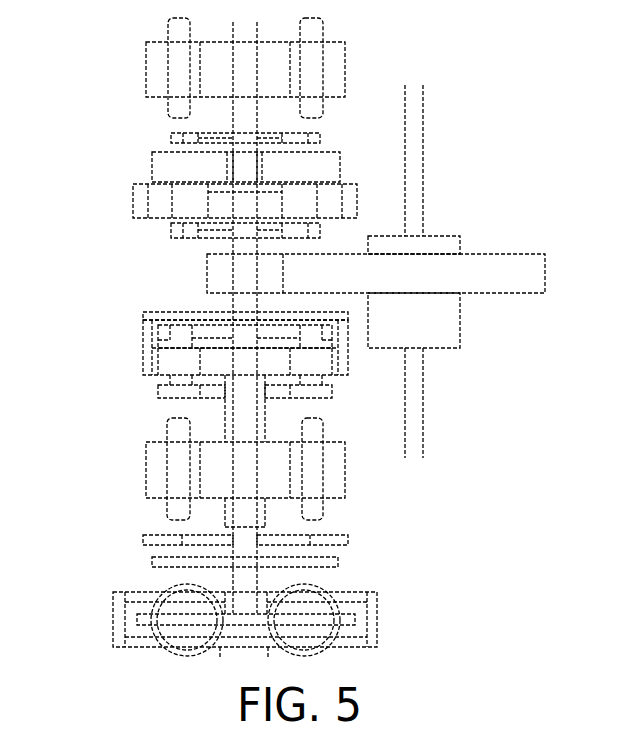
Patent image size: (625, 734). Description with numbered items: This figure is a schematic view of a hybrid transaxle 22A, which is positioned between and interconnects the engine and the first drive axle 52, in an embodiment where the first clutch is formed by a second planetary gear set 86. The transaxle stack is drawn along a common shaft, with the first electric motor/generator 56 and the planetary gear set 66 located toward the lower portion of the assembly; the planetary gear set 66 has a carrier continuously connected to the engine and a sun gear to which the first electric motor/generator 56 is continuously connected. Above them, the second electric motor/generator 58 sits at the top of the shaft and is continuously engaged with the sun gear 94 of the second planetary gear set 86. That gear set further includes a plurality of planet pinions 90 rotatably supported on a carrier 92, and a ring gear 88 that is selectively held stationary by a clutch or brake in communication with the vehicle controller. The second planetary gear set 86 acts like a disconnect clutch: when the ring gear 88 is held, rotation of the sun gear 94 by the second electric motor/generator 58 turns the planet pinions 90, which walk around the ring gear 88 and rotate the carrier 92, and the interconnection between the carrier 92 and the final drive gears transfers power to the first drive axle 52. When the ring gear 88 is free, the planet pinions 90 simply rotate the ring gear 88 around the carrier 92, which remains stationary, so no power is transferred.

The second electric motor/generator 58 is at (220, 68).
The carrier 92 is at (317, 135).
The planet pinions 90 is at (178, 165).
The second planetary gear set 86 is at (148, 168).
The ring gear 88 is at (133, 205).
The sun gear 94 is at (242, 173).
The first drive axle 52 is at (417, 388).
The planetary gear set 66 is at (139, 360).
The first electric motor/generator 56 is at (273, 470).
The hybrid transaxle 22A is at (448, 524).